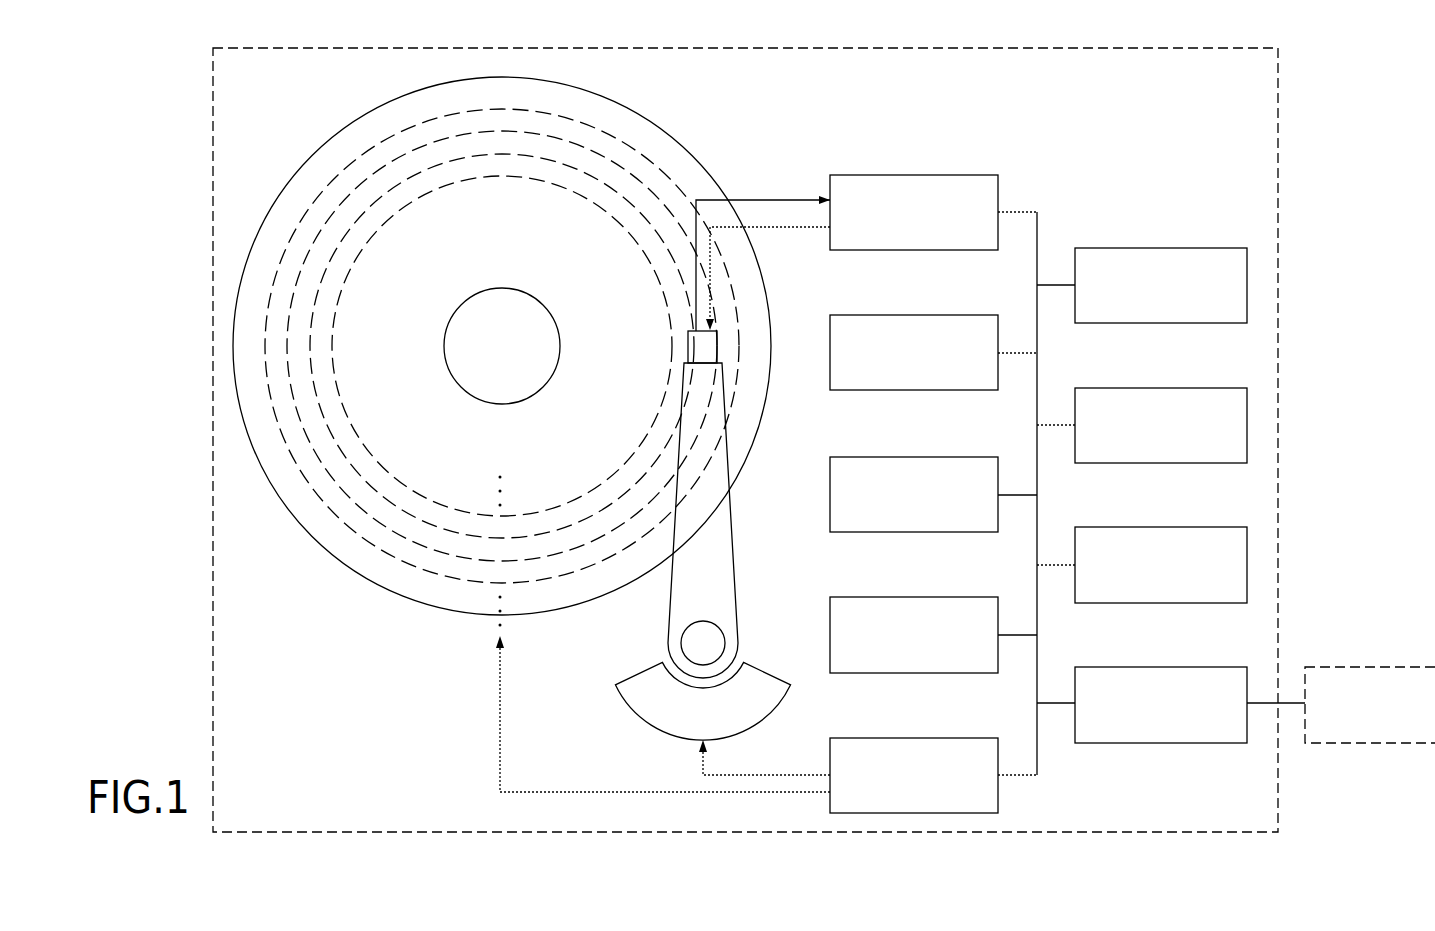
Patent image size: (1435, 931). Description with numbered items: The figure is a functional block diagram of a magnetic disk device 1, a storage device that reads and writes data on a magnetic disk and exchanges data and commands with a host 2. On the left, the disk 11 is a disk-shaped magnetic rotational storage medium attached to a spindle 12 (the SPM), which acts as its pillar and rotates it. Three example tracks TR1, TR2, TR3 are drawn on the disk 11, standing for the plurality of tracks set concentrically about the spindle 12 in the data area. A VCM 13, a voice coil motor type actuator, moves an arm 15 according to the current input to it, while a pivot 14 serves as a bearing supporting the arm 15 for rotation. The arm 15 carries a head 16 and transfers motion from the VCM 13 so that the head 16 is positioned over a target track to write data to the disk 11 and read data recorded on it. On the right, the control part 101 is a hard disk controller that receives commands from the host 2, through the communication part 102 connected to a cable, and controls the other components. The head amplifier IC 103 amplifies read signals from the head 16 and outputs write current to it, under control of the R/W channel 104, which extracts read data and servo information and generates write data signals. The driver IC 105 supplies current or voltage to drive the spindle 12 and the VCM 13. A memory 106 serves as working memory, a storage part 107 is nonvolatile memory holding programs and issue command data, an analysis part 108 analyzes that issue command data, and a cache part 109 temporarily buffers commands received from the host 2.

The magnetic disk device 1 is at (1022, 48).
The host 2 is at (1395, 667).
The disk 11 is at (345, 125).
The spindle 12 is at (560, 358).
The VCM 13 is at (772, 718).
The pivot 14 is at (681, 643).
The arm 15 is at (737, 565).
The head 16 is at (717, 350).
The control part 101 is at (1200, 527).
The communication part 102 is at (1200, 667).
The head amplifier IC 103 is at (950, 175).
The R/W channel 104 is at (950, 315).
The driver IC 105 is at (950, 738).
The memory 106 is at (950, 457).
The storage part 107 is at (950, 597).
The analysis part 108 is at (1200, 388).
The cache part 109 is at (1200, 248).
The track TR1 is at (363, 529).
The track TR2 is at (421, 537).
The track TR3 is at (467, 527).